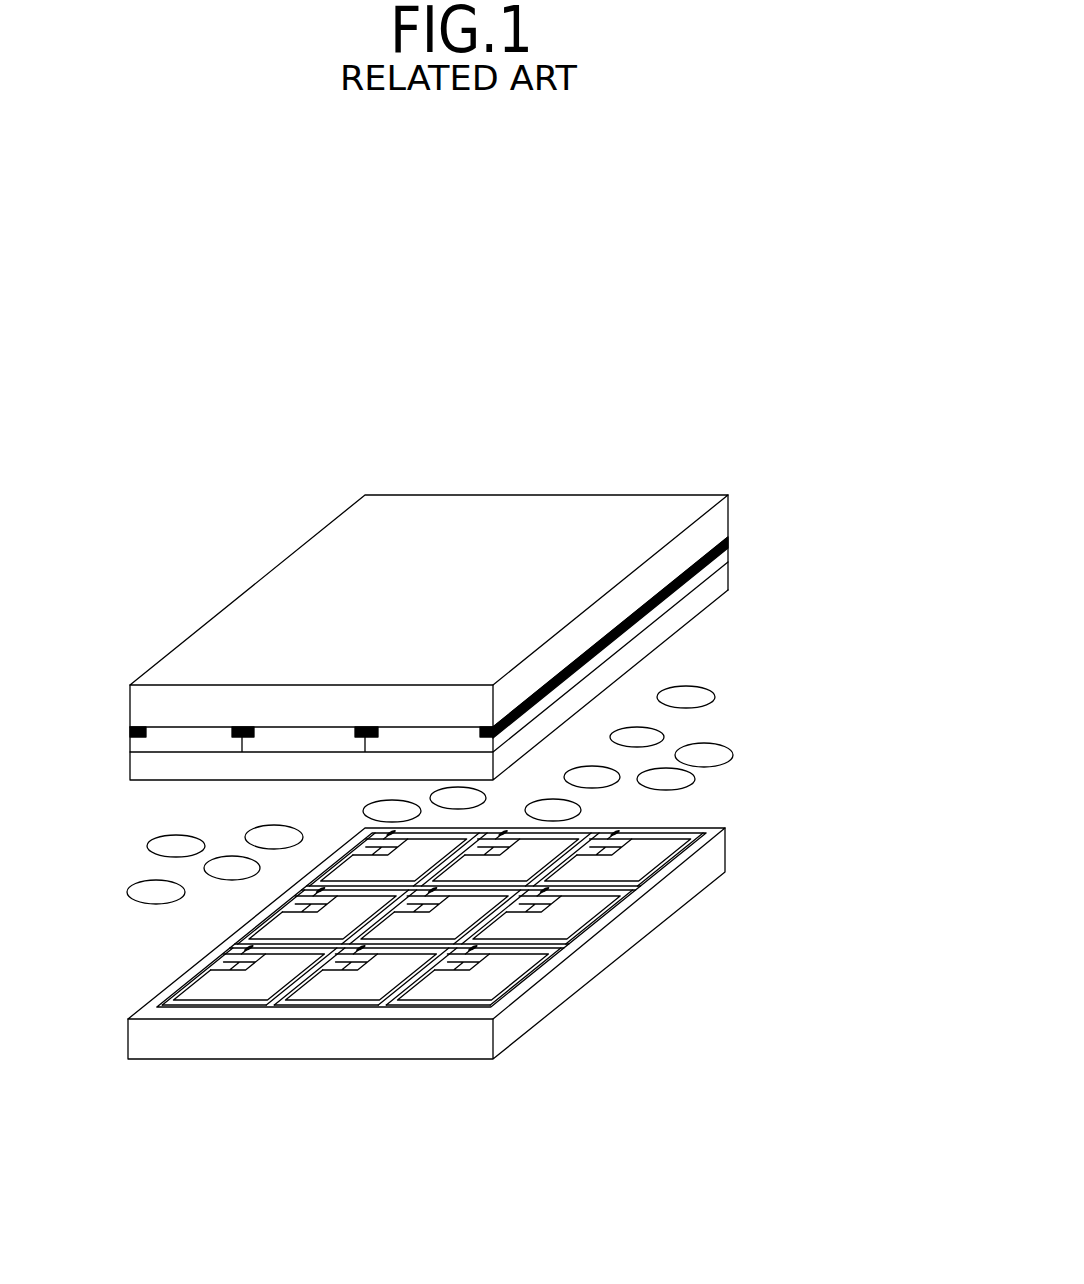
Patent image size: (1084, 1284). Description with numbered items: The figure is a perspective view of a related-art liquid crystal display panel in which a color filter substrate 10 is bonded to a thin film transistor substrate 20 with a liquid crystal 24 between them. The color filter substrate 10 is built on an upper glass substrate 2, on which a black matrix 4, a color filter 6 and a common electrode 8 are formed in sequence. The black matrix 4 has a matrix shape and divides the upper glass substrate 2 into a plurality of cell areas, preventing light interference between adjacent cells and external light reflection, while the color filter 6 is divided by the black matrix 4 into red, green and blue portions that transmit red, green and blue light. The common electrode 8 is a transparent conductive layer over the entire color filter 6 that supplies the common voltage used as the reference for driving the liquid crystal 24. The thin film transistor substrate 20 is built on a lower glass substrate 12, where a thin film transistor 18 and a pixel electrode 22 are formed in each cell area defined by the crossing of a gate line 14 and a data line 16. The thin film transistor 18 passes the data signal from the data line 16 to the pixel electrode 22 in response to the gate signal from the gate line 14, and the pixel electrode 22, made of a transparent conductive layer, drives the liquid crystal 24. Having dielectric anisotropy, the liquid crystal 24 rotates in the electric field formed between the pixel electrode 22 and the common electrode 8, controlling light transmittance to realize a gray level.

The upper glass substrate 2 is at (720, 522).
The black matrix 4 is at (130, 737).
The color filter 6 is at (725, 553).
The common electrode 8 is at (727, 578).
The color filter substrate 10 is at (845, 488).
The lower glass substrate 12 is at (713, 865).
The gate line 14 is at (637, 889).
The data line 16 is at (387, 1003).
The thin film transistor 18 is at (466, 968).
The thin film transistor substrate 20 is at (847, 845).
The pixel electrode 22 is at (502, 973).
The liquid crystal 24 is at (705, 698).